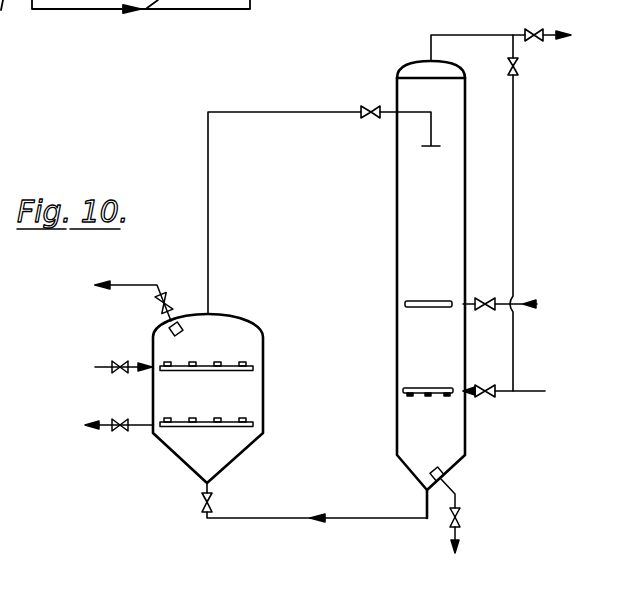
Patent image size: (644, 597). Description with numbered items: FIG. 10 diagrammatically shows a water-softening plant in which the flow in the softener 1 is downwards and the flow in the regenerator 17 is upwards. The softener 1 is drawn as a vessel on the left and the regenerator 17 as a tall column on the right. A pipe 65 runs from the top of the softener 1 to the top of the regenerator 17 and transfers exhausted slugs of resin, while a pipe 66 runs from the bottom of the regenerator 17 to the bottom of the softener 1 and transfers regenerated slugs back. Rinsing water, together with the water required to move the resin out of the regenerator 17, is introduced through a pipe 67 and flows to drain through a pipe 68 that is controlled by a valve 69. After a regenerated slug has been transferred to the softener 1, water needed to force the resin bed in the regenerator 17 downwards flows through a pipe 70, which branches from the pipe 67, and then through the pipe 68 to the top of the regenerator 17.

The reaction vessel 1 is at (152, 338).
The distillation column 17 is at (466, 122).
The pipe 65 is at (276, 112).
The pipe 66 is at (288, 518).
The pipe 67 is at (505, 392).
The pipe 68 is at (458, 35).
The valve 69 is at (534, 31).
The pipe 70 is at (514, 278).